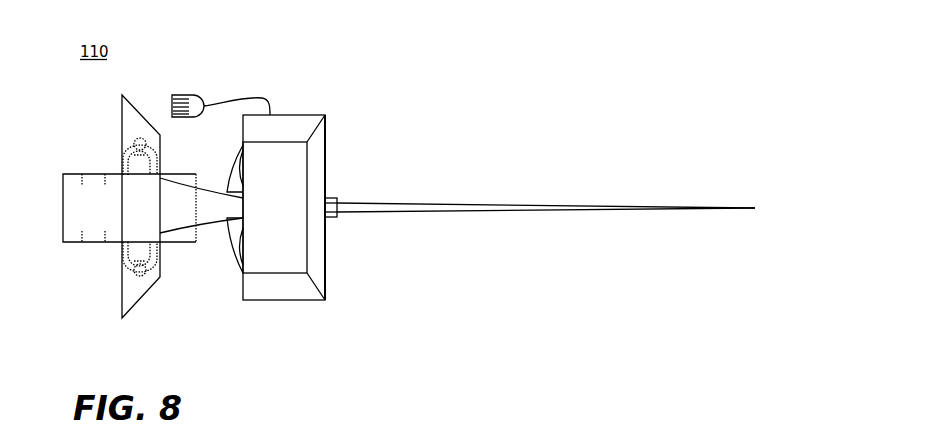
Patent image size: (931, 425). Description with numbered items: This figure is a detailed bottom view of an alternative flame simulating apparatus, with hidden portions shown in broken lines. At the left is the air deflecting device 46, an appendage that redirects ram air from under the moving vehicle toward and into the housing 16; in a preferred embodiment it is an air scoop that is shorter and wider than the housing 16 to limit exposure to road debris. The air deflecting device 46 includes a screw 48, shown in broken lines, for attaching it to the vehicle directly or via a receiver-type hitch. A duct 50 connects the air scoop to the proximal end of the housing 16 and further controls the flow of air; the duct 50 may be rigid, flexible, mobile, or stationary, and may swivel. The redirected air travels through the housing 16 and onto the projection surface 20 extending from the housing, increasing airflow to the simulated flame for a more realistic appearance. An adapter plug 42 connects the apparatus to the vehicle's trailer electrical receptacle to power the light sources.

The housing 16 is at (293, 298).
The projection surface 20 is at (497, 195).
The adapter plug 42 is at (200, 92).
The air deflecting device 46 is at (130, 293).
The screw 48 is at (124, 140).
The duct 50 is at (173, 218).